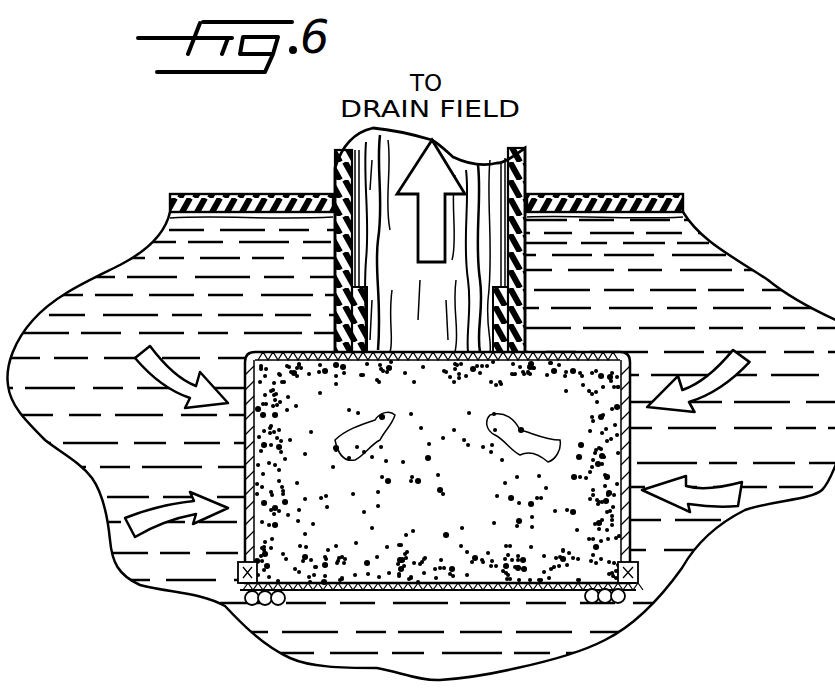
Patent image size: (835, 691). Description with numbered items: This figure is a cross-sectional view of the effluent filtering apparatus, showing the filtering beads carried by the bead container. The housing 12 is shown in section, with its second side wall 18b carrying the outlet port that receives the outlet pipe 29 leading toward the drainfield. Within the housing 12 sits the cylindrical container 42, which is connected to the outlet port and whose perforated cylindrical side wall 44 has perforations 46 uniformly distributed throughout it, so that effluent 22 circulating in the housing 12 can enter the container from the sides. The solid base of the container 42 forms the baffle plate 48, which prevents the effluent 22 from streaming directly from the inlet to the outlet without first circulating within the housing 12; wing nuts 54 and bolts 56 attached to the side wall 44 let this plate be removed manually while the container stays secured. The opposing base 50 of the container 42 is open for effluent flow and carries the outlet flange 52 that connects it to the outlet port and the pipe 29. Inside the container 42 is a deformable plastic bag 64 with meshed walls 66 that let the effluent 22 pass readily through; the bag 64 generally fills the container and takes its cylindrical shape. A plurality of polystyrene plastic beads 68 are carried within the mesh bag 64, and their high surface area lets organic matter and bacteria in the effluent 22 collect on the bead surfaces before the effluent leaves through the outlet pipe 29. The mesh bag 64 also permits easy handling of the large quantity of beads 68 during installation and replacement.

The housing 12 is at (207, 191).
The second side wall 18b is at (576, 194).
The outlet pipe 29 is at (336, 170).
The deformable plastic bag 64 is at (408, 347).
The meshed walls 66 is at (390, 352).
The outlet flange 52 is at (528, 318).
The opposing base 50 is at (568, 352).
The effluent 22 is at (145, 424).
The perforations 46 is at (244, 485).
The perforated cylindrical side wall 44 is at (640, 443).
The polystyrene plastic beads 68 is at (396, 504).
The baffle plate 48 is at (456, 590).
The cylindrical container 42 is at (232, 595).
The wing nuts 54 is at (622, 600).
The bolts 56 is at (677, 612).